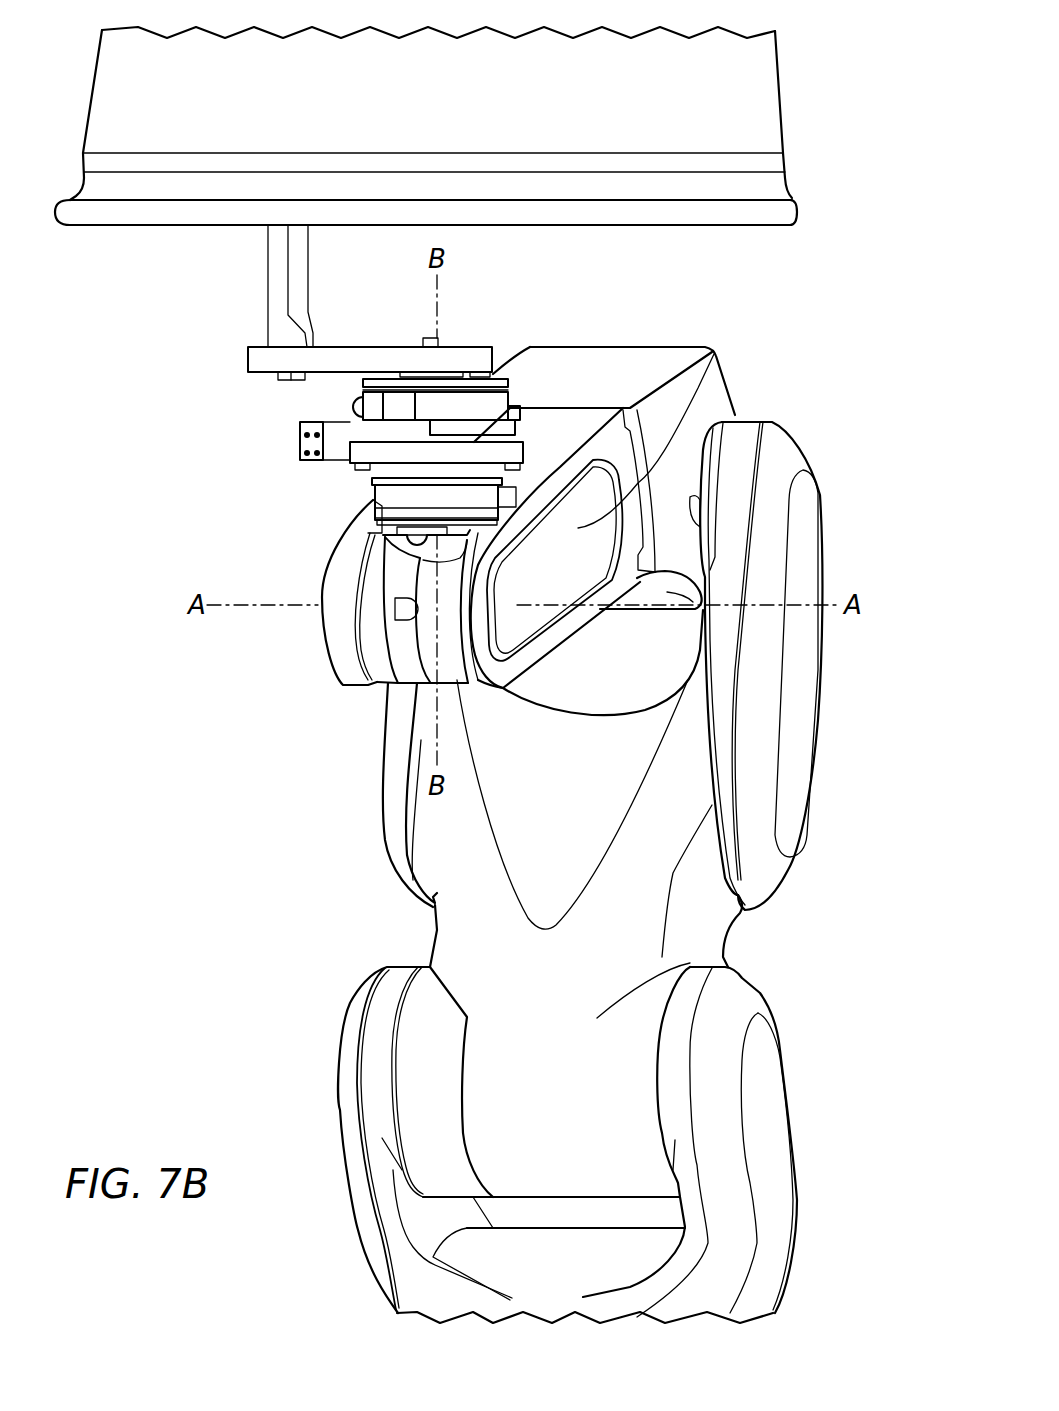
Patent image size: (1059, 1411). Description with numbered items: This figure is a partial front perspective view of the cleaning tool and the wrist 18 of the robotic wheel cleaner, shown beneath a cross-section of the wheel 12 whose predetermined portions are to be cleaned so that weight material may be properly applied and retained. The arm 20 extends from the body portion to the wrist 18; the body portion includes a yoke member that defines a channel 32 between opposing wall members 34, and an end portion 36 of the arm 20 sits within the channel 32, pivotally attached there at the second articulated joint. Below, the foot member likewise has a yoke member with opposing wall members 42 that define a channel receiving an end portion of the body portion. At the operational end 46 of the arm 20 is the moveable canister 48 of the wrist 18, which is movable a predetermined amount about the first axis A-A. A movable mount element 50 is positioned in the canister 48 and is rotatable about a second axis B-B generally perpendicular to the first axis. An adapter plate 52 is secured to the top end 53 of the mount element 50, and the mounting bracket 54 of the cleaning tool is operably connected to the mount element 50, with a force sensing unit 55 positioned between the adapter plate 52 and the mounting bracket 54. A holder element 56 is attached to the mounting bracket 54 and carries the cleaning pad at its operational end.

The wheel 12 is at (803, 124).
The wrist 18 is at (285, 452).
The arm 20 is at (724, 362).
The channel 32 is at (643, 646).
The wall members 34 is at (392, 773).
The end portion 36 is at (722, 405).
The wall members 42 is at (621, 1210).
The operational end 46 is at (320, 642).
The moveable canister 48 is at (365, 603).
The movable mount element 50 is at (390, 502).
The adapter plate 52 is at (372, 452).
The top end 53 is at (370, 482).
The mounting bracket 54 is at (391, 356).
The force sensing unit 55 is at (495, 374).
The holder element 56 is at (276, 255).